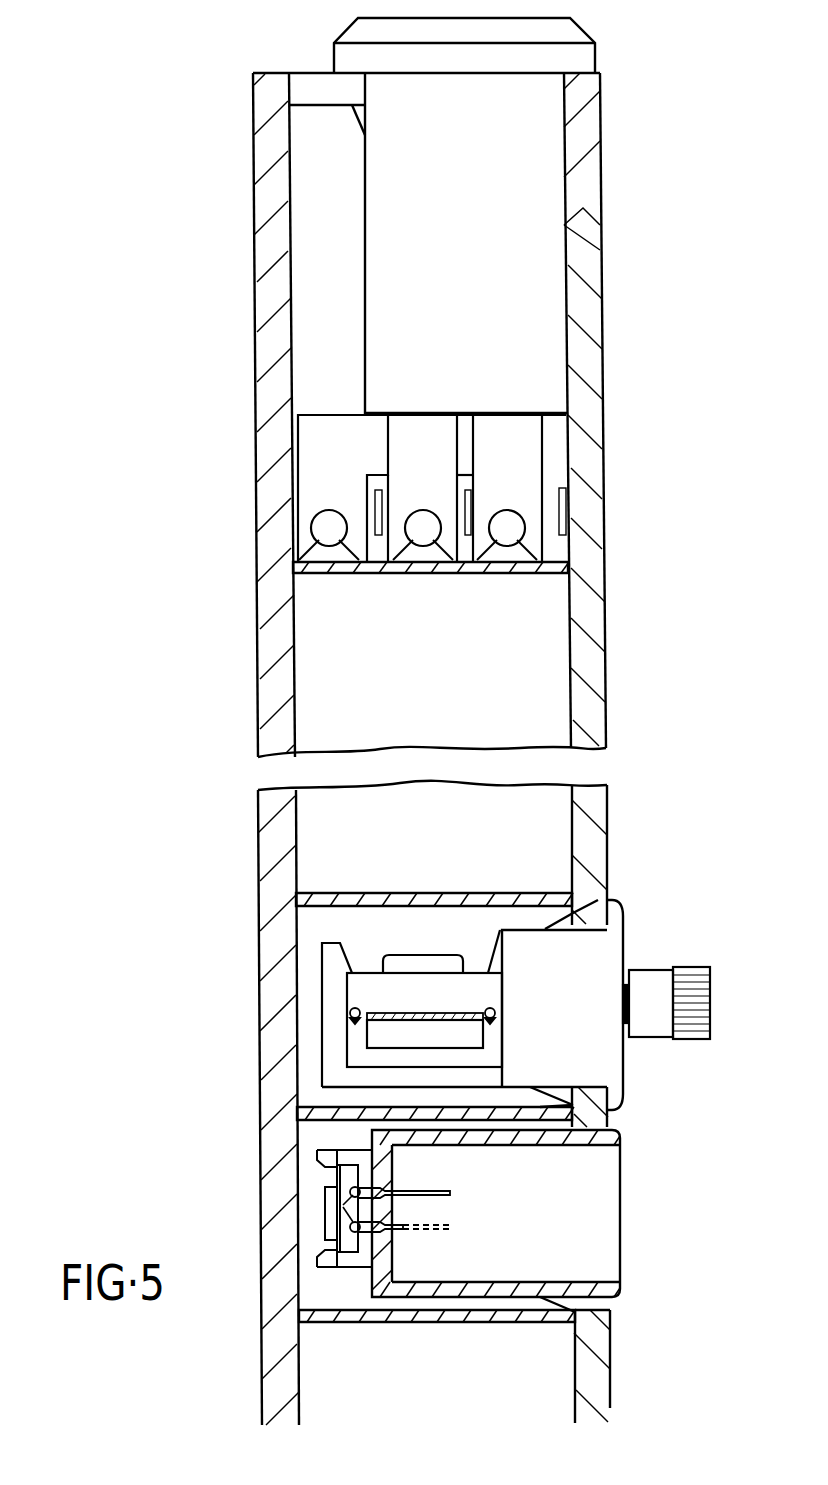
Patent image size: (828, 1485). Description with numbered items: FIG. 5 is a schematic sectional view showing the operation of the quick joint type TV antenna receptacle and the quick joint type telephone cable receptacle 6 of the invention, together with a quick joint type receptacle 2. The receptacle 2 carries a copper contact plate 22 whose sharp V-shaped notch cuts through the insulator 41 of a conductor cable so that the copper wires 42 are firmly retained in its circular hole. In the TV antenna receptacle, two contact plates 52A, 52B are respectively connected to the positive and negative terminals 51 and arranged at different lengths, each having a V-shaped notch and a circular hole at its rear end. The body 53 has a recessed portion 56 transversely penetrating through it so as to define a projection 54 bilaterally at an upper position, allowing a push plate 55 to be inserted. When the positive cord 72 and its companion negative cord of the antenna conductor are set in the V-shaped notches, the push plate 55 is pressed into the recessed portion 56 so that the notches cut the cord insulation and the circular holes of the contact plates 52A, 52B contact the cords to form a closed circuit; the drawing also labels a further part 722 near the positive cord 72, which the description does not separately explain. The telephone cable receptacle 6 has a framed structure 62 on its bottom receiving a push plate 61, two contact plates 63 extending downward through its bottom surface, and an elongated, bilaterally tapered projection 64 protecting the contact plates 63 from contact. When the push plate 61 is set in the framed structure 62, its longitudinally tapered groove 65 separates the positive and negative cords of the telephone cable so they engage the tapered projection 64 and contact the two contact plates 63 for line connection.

The receptacle 2 is at (535, 322).
The contact plate 22 is at (323, 425).
The insulator 41 is at (331, 548).
The copper wires 42 is at (329, 514).
The terminal 51 is at (700, 989).
The contact plate 52A is at (425, 1056).
The contact plate 52B is at (492, 1031).
The body 53 is at (598, 953).
The projection 54 is at (336, 967).
The push plate 55 is at (470, 982).
The recessed portion 56 is at (367, 962).
The telephone cable receptacle 6 is at (607, 1190).
The push plate 61 is at (340, 1179).
The framed structure 62 is at (342, 1257).
The contact plate 63 is at (373, 1228).
The tapered projection 64 is at (343, 1205).
The tapered groove 65 is at (348, 1214).
The positive cord 72 is at (357, 1008).
The contact plate 722 is at (373, 1014).